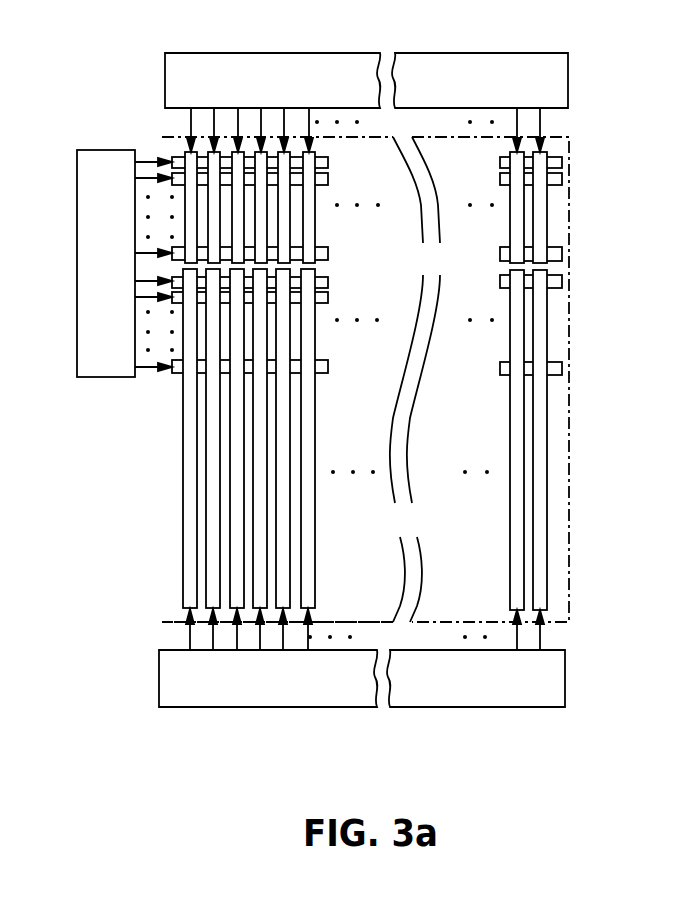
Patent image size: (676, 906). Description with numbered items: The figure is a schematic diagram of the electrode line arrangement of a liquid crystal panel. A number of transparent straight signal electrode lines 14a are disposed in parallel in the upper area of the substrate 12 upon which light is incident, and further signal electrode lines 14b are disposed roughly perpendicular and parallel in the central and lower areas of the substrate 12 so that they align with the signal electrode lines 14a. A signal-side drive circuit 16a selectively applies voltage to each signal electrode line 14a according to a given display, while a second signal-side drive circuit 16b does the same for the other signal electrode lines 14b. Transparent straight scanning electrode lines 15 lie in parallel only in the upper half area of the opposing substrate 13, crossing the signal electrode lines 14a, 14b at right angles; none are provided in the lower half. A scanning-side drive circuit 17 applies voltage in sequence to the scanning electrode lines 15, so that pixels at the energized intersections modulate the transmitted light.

The substrate 12 is at (409, 379).
The substrate 13 is at (569, 197).
The signal electrode lines 14a is at (517, 215).
The signal electrode lines 14b is at (315, 490).
The scanning electrode lines 15 is at (175, 375).
The signal-side drive circuit 16a is at (337, 53).
The signal-side drive circuit 16b is at (265, 707).
The scanning-side drive circuit 17 is at (108, 377).